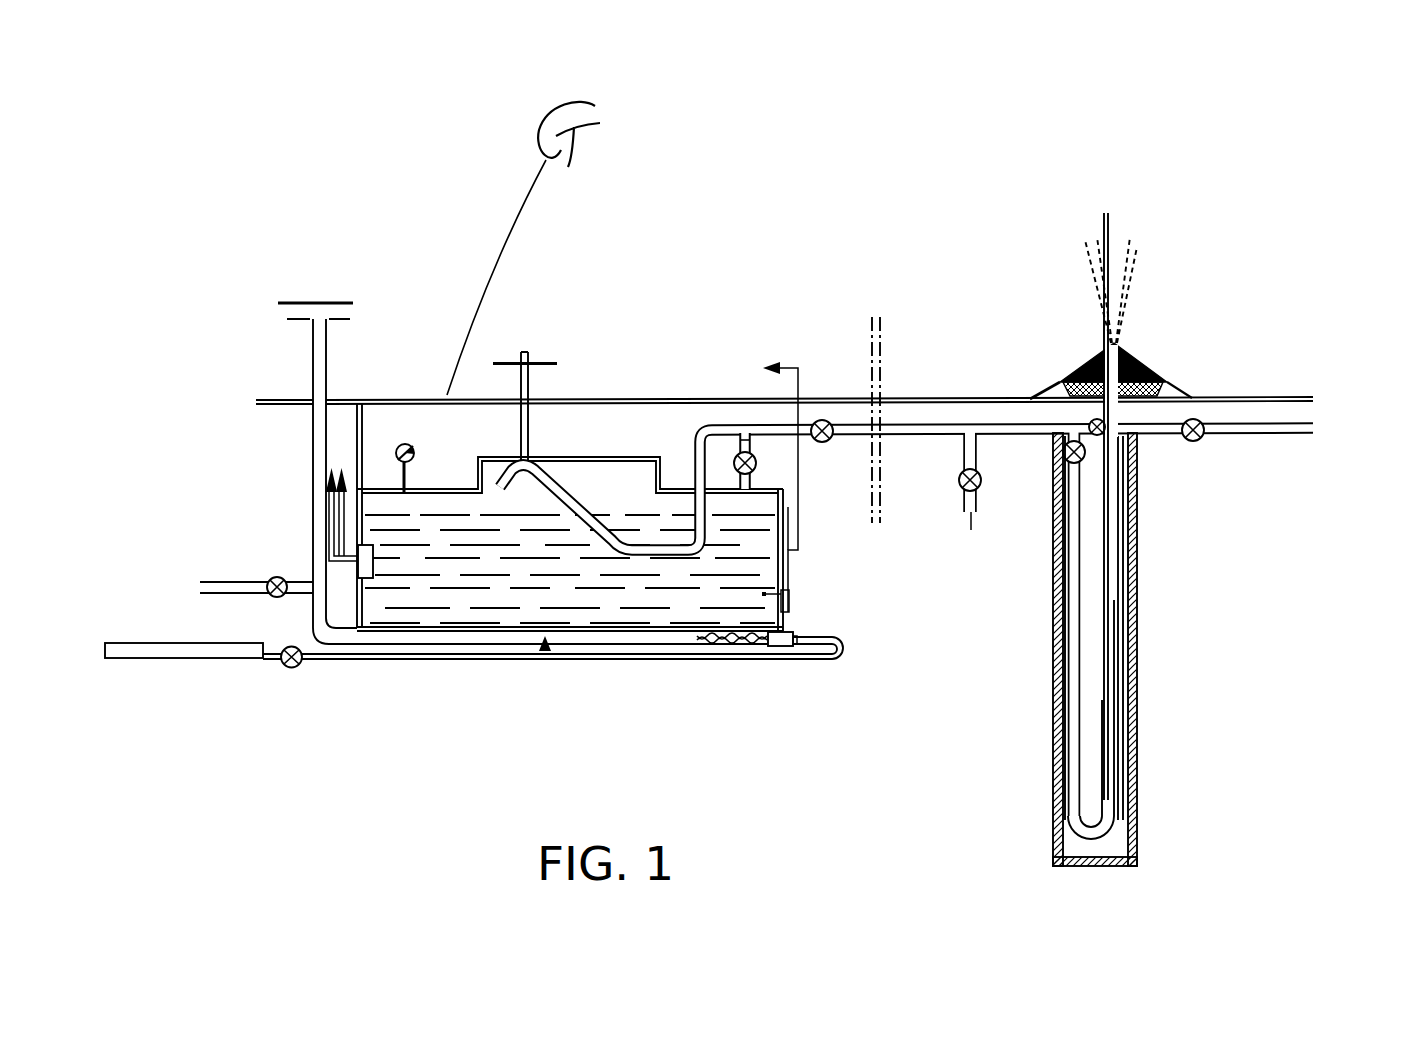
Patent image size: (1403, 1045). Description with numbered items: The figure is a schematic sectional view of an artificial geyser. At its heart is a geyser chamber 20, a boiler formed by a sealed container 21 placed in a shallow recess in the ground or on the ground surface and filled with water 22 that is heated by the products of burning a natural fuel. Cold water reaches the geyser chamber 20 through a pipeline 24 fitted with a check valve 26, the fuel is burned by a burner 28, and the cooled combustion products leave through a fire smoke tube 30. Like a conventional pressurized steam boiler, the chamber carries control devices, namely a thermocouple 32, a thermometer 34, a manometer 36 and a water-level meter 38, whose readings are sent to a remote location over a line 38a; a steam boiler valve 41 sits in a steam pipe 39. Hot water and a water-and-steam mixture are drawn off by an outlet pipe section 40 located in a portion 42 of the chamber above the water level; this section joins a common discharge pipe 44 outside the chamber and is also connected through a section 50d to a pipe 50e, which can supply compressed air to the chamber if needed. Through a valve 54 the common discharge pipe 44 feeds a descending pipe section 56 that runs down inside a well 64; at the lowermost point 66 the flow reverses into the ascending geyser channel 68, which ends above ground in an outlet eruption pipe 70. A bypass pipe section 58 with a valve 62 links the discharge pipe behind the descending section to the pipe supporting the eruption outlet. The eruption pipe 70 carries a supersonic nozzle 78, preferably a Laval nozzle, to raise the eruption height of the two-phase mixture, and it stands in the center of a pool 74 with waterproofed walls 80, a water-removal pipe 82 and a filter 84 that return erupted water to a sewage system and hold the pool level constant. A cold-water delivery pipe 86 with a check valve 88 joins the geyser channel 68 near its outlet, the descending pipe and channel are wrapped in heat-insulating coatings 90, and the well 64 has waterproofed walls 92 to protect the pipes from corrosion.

The geyser chamber 20 is at (545, 651).
The sealed container 21 is at (618, 630).
The water 22 is at (423, 600).
The pipeline 24 is at (210, 587).
The check valve 26 is at (272, 578).
The burner 28 is at (794, 592).
The fire smoke tube 30 is at (315, 357).
The thermocouple 32 is at (779, 648).
The thermometer 34 is at (363, 558).
The manometer 36 is at (404, 443).
The water-level meter 38 is at (783, 568).
The line 38a is at (781, 364).
The steam pipe 39 is at (738, 440).
The outlet pipe section 40 is at (500, 489).
The steam boiler valve 41 is at (739, 457).
The portion of the geyser chamber 42 is at (578, 473).
The common discharge pipe 44 is at (749, 441).
The section 50d is at (965, 470).
The pipe 50e is at (967, 530).
The valve 54 is at (818, 423).
The descending pipe section 56 is at (1080, 598).
The bypass pipe section 58 is at (1080, 421).
The valve 62 is at (1092, 420).
The well 64 is at (1088, 560).
The lowermost point 66 is at (1098, 836).
The geyser channel 68 is at (1118, 690).
The outlet eruption pipe 70 is at (1114, 385).
The pool 74 is at (1148, 360).
The supersonic nozzle 78 is at (1133, 243).
The waterproofed walls 80 is at (1160, 370).
The water-removal pipe 82 is at (1262, 400).
The filter 84 is at (1168, 382).
The cold-water delivery pipe 86 is at (1240, 430).
The check valve 88 is at (1205, 438).
The heat-insulating coatings 90 is at (1103, 608).
The waterproofed walls 92 is at (1137, 817).